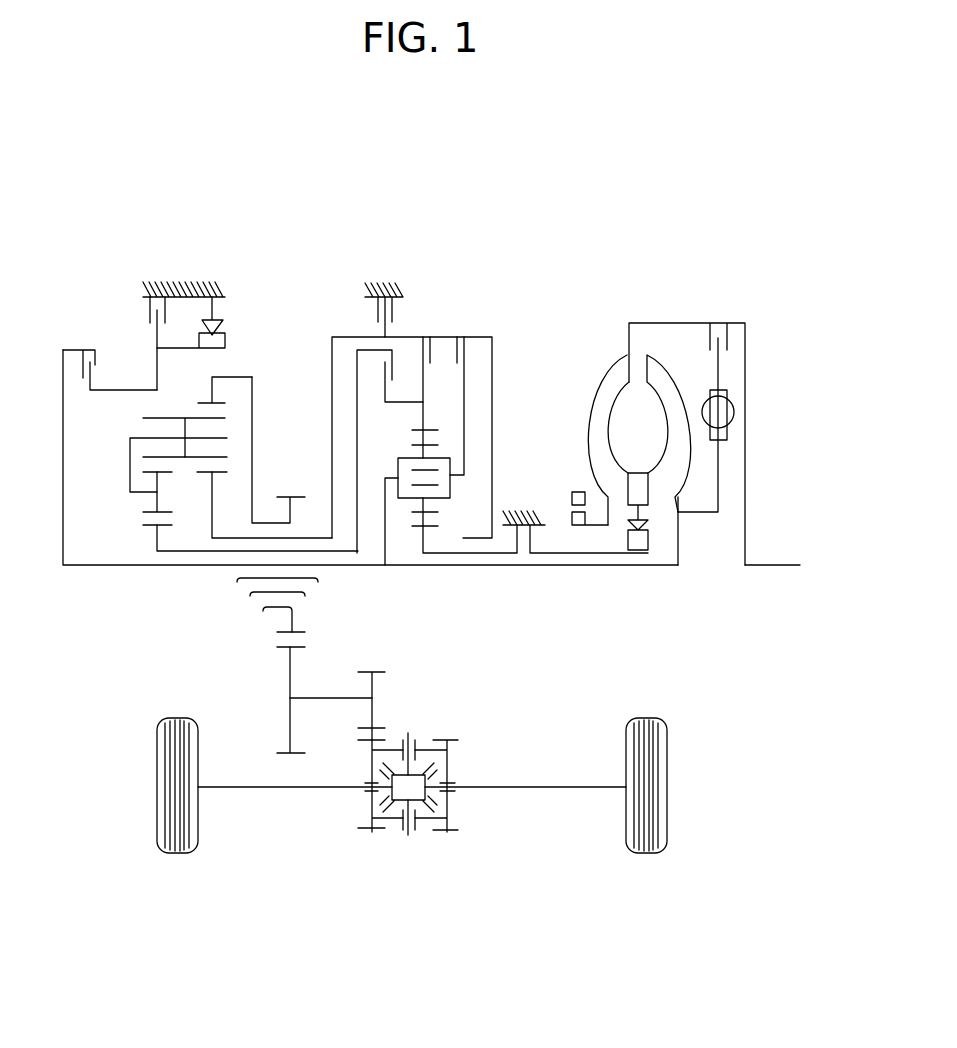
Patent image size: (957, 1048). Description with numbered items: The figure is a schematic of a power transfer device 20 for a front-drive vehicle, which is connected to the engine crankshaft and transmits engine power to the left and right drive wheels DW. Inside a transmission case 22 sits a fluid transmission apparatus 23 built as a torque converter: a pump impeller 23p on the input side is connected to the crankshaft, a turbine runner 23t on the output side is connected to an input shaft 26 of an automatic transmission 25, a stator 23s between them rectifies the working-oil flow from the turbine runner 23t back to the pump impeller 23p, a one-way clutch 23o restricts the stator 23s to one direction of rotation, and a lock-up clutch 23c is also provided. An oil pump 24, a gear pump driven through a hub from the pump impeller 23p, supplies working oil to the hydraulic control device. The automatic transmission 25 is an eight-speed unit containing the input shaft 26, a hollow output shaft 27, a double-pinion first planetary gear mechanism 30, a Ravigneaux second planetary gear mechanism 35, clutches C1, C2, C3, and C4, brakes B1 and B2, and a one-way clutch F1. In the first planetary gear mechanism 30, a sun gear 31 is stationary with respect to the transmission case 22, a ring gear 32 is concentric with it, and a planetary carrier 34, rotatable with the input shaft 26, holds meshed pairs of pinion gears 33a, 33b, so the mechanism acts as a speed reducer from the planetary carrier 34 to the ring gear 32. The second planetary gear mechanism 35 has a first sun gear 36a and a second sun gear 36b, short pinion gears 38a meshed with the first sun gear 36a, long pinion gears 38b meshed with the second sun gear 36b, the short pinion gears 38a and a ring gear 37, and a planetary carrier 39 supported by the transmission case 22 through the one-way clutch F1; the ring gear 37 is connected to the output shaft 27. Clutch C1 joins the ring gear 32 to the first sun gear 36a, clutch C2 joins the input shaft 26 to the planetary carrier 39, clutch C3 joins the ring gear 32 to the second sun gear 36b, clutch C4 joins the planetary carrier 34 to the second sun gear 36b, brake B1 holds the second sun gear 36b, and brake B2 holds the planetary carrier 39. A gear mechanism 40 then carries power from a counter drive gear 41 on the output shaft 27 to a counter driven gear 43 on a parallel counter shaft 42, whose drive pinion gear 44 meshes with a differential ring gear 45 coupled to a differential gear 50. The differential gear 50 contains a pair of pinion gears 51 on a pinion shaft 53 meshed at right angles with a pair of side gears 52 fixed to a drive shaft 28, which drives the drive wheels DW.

The power transfer device 20 is at (470, 250).
The transmission case 22 is at (185, 284).
The fluid transmission apparatus 23 is at (678, 437).
The lock-up clutch 23c is at (735, 372).
The pump impeller 23p is at (605, 385).
The turbine runner 23t is at (672, 380).
The stator 23s is at (638, 480).
The one-way clutch 23o is at (658, 540).
The oil pump 24 is at (563, 517).
The automatic transmission 25 is at (300, 305).
The input shaft 26 is at (672, 568).
The output shaft 27 is at (272, 508).
The drive shaft 28 is at (262, 790).
The first planetary gear mechanism 30 is at (392, 460).
The sun gear 31 is at (408, 545).
The ring gear 32 is at (413, 430).
The pinion gear 33a is at (437, 485).
The pinion gear 33b is at (440, 435).
The planetary carrier 34 is at (452, 488).
The second planetary gear mechanism 35 is at (120, 522).
The first sun gear 36a is at (150, 530).
The second sun gear 36b is at (212, 475).
The ring gear 37 is at (225, 398).
The short pinion gear 38a is at (150, 498).
The long pinion gear 38b is at (143, 417).
The planetary carrier 39 is at (130, 448).
The gear mechanism 40 is at (275, 662).
The counter drive gear 41 is at (278, 633).
The counter shaft 42 is at (322, 698).
The counter driven gear 43 is at (290, 698).
The drive pinion gear 44 is at (385, 672).
The differential ring gear 45 is at (372, 832).
The differential gear 50 is at (470, 760).
The pinion gear 51 is at (415, 745).
The side gear 52 is at (392, 782).
The pinion shaft 53 is at (410, 835).
The brake B1 is at (393, 315).
The brake B2 is at (150, 315).
The clutch C1 is at (382, 370).
The clutch C2 is at (82, 372).
The clutch C3 is at (437, 352).
The clutch C4 is at (470, 355).
The one-way clutch F1 is at (226, 343).
The drive wheel DW is at (157, 787).